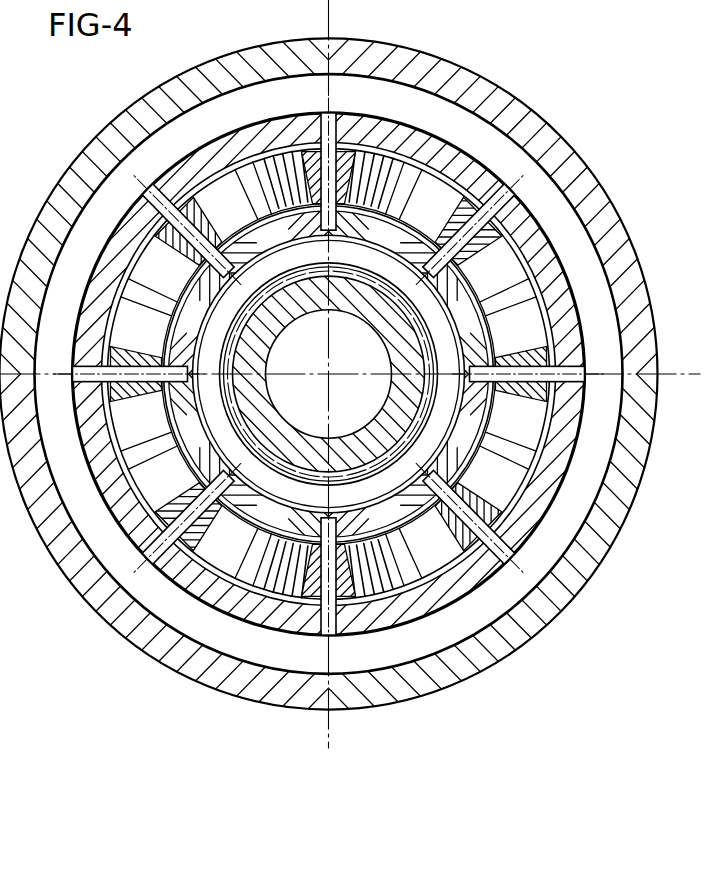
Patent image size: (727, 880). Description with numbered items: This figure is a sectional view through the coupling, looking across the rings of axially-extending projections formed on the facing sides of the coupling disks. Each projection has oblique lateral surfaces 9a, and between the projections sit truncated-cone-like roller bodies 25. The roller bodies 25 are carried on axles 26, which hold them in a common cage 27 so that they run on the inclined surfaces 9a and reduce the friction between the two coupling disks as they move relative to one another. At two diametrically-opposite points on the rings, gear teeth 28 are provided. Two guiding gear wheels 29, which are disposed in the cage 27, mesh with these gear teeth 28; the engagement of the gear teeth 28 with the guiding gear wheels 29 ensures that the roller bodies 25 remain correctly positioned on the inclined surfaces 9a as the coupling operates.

The oblique lateral surfaces 9a is at (166, 470).
The roller bodies 25 is at (483, 588).
The axles 26 is at (505, 543).
The cage 27 is at (418, 243).
The gear teeth 28 is at (265, 185).
The guiding gear wheels 29 is at (315, 140).